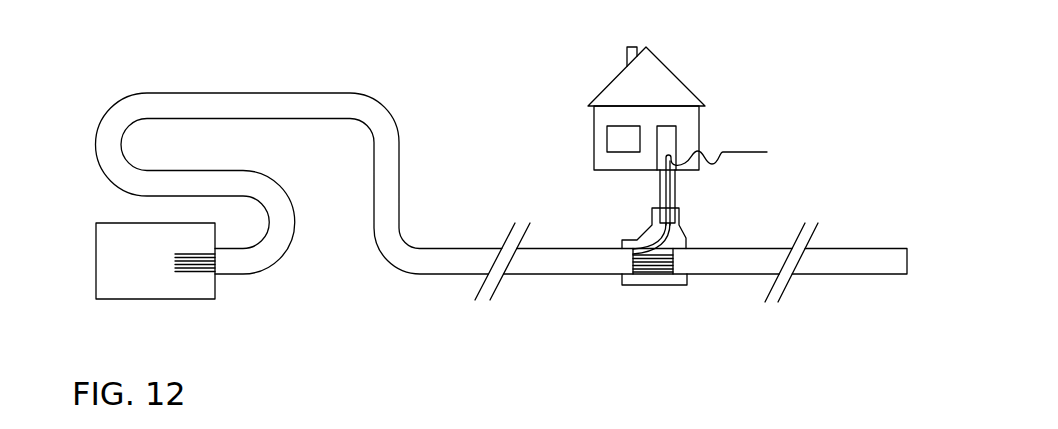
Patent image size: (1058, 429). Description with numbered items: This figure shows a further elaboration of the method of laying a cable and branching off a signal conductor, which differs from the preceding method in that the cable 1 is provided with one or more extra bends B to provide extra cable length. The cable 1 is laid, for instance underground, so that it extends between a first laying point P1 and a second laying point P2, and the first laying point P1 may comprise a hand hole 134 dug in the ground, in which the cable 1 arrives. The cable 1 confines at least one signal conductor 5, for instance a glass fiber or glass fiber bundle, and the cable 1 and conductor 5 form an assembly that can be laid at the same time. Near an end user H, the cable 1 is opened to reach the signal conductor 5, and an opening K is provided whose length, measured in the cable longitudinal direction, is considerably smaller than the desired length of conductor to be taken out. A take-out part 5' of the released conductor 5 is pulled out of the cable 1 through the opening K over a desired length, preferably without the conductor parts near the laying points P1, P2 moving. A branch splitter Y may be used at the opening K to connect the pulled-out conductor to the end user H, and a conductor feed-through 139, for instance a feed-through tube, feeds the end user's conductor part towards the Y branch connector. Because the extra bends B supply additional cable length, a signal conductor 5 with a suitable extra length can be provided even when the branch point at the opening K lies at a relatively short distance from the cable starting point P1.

The hand hole 134 is at (96, 268).
The signal conductor 5 is at (168, 298).
The extra bend B is at (230, 170).
The cable 1 is at (415, 247).
The end user H is at (623, 103).
The conductor feed-through 139 is at (673, 199).
The take-out part 5' is at (702, 180).
The opening K is at (654, 268).
The branch splitter Y is at (658, 280).
The first laying point P1 is at (219, 291).
The second laying point P2 is at (903, 293).